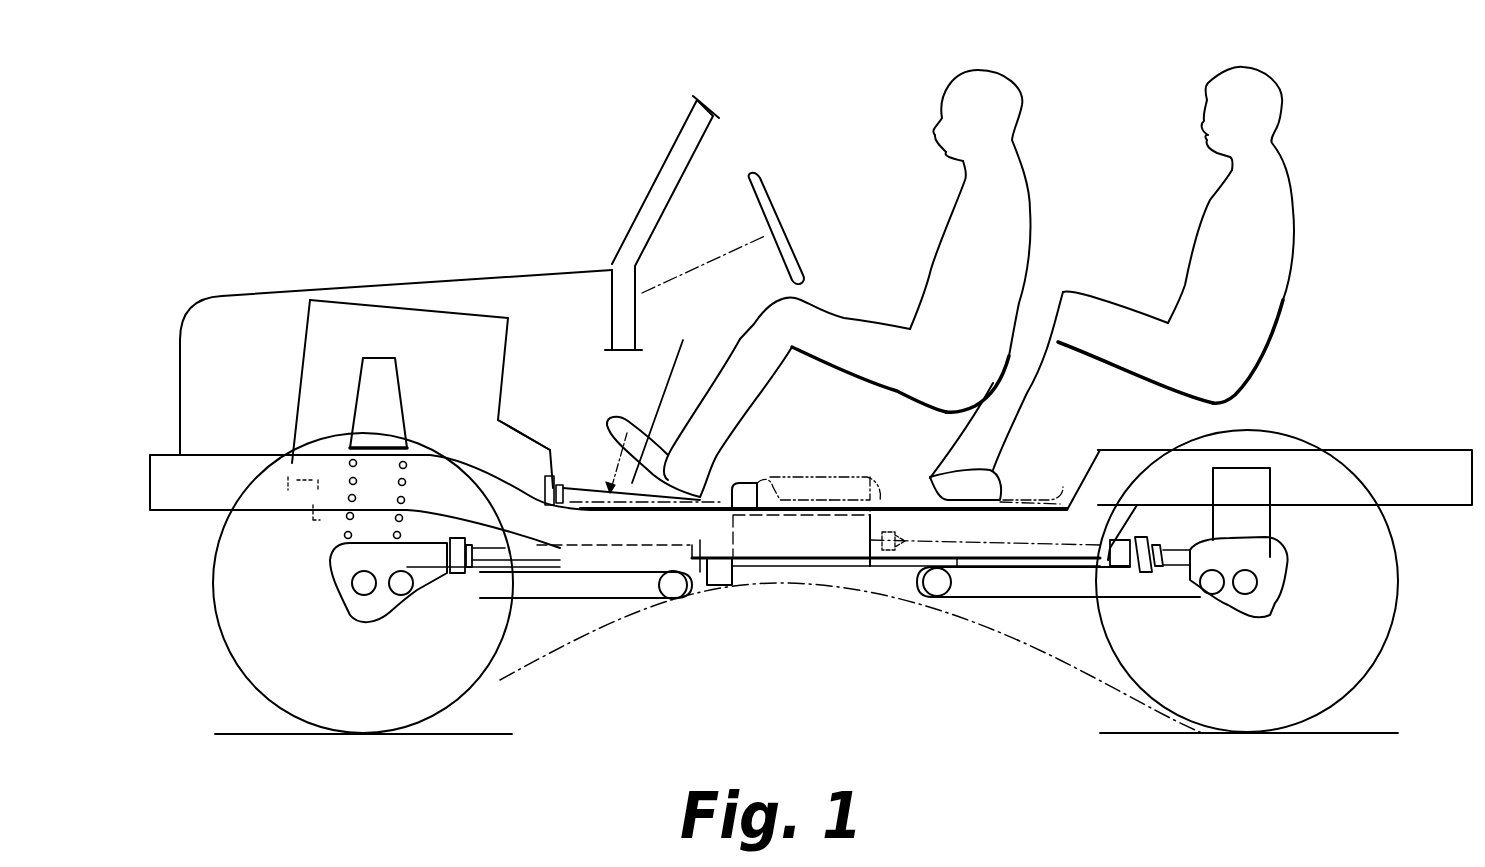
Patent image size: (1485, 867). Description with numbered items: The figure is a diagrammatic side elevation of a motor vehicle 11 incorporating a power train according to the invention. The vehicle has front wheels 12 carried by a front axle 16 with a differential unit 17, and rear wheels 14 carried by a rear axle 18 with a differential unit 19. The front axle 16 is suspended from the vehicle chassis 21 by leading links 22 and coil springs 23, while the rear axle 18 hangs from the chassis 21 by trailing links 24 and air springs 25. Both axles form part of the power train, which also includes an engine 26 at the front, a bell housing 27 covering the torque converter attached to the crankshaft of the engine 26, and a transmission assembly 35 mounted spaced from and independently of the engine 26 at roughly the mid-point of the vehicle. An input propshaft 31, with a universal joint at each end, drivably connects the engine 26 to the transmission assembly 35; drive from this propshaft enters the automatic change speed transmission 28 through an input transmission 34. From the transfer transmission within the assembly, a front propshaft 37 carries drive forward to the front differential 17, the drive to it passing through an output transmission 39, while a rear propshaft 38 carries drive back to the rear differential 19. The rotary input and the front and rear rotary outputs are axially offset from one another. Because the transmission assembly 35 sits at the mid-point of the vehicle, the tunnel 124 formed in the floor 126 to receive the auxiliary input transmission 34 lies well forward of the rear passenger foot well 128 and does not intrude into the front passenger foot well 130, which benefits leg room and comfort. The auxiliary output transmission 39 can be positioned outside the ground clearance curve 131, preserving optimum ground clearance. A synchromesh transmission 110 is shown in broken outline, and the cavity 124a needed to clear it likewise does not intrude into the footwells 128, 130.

The motor vehicle 11 is at (538, 262).
The front wheel 12 is at (296, 702).
The rear wheel 14 is at (1198, 700).
The front axle 16 is at (360, 590).
The differential unit 17 is at (340, 565).
The rear axle 18 is at (1248, 585).
The differential unit 19 is at (1268, 565).
The vehicle chassis 21 is at (1402, 468).
The leading links 22 is at (596, 585).
The coil springs 23 is at (405, 481).
The trailing links 24 is at (1020, 592).
The air springs 25 is at (1246, 480).
The engine 26 is at (358, 322).
The bell housing 27 is at (511, 440).
The automatic change speed transmission 28 is at (812, 580).
The input propshaft 31 is at (578, 486).
The input transmission 34 is at (740, 497).
The transmission assembly 35 is at (760, 585).
The front propshaft 37 is at (500, 550).
The rear propshaft 38 is at (1118, 560).
The output transmission 39 is at (720, 585).
The synchromesh transmission 110 is at (848, 480).
The tunnel 124 is at (752, 478).
The cavity 124a is at (800, 478).
The floor 126 is at (622, 428).
The rear passenger foot well 128 is at (946, 505).
The front passenger foot well 130 is at (663, 400).
The ground clearance curve 131 is at (890, 595).